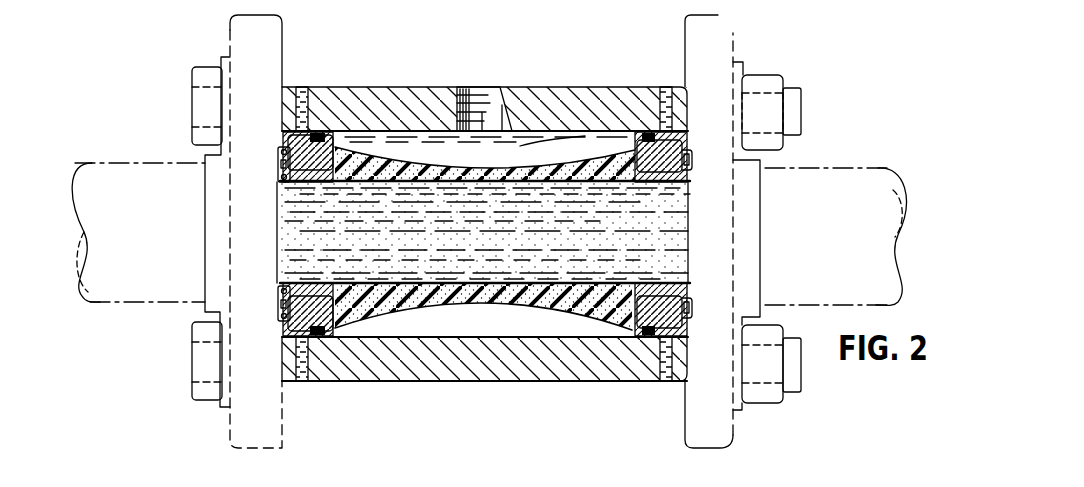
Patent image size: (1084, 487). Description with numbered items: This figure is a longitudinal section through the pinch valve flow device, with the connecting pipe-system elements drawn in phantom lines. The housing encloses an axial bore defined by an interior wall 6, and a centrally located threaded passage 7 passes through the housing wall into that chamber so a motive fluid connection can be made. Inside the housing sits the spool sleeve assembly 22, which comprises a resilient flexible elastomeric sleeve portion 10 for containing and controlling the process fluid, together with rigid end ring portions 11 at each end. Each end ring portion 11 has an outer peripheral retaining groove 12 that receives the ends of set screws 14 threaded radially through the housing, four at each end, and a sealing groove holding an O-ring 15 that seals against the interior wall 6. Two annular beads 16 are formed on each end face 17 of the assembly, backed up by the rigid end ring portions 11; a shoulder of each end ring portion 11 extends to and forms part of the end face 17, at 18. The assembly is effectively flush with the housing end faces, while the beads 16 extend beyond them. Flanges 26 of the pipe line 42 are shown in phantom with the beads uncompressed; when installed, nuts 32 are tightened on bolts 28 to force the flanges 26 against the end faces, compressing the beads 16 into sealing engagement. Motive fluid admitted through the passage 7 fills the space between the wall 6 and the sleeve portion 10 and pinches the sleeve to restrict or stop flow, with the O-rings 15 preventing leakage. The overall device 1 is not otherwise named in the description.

The bearing assembly 1 is at (657, 40).
The lubricant cavity 6 is at (520, 147).
The grease fitting 7 is at (473, 88).
The elastomeric seal body 10 is at (397, 154).
The inner sleeve 11 is at (291, 175).
The seal ring 12 is at (644, 133).
The threaded bolt 14 is at (300, 89).
The retaining ring 15 is at (636, 340).
The O-ring 16 is at (281, 153).
The seal carrier 17 is at (281, 298).
The seal retainer 18 is at (277, 141).
The annular cavity 22 is at (422, 320).
The mounting plate 26 is at (260, 23).
The nut 28 is at (205, 67).
The nut 32 is at (757, 78).
The shaft 42 is at (143, 176).